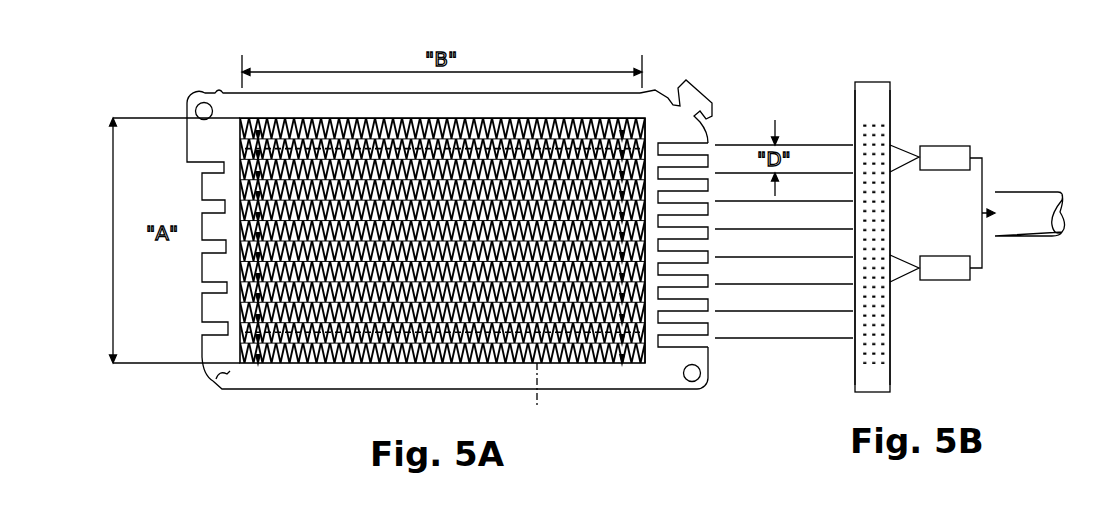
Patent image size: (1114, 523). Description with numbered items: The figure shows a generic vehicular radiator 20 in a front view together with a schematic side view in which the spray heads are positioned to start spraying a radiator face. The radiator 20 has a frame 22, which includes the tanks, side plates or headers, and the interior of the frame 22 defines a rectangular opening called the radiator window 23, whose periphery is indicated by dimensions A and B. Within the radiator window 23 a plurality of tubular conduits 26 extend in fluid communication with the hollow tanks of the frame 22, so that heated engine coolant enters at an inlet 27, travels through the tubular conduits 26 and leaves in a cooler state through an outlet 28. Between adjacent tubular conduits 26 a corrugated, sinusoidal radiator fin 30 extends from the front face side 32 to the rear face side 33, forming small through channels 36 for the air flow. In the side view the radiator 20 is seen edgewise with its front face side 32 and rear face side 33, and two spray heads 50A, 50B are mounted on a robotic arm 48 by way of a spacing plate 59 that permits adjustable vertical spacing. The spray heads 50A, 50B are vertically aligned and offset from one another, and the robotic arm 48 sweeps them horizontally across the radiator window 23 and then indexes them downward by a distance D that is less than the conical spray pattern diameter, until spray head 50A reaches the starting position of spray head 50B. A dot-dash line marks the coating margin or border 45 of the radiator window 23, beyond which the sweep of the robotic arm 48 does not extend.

In FIG. 5A, the radiator 20 is at (625, 392).
In FIG. 5B, the radiator 20 is at (872, 82).
In FIG. 5A, the frame 22 is at (217, 378).
In FIG. 5A, the radiator window 23 is at (293, 367).
In FIG. 5A, the tubular conduits 26 is at (643, 120).
In FIG. 5A, the inlet 27 is at (192, 97).
In FIG. 5A, the outlet 28 is at (700, 381).
In FIG. 5A, the radiator fin 30 is at (562, 364).
In FIG. 5B, the front face side 32 is at (853, 92).
In FIG. 5B, the rear face side 33 is at (892, 92).
In FIG. 5A, the through channels 36 is at (392, 119).
In FIG. 5A, the coating margin or border 45 is at (539, 396).
In FIG. 5B, the robotic arm 48 is at (1028, 237).
In FIG. 5B, the spray head 50A is at (953, 146).
In FIG. 5B, the spray head 50B is at (943, 282).
In FIG. 5B, the spacing plate 59 is at (983, 176).